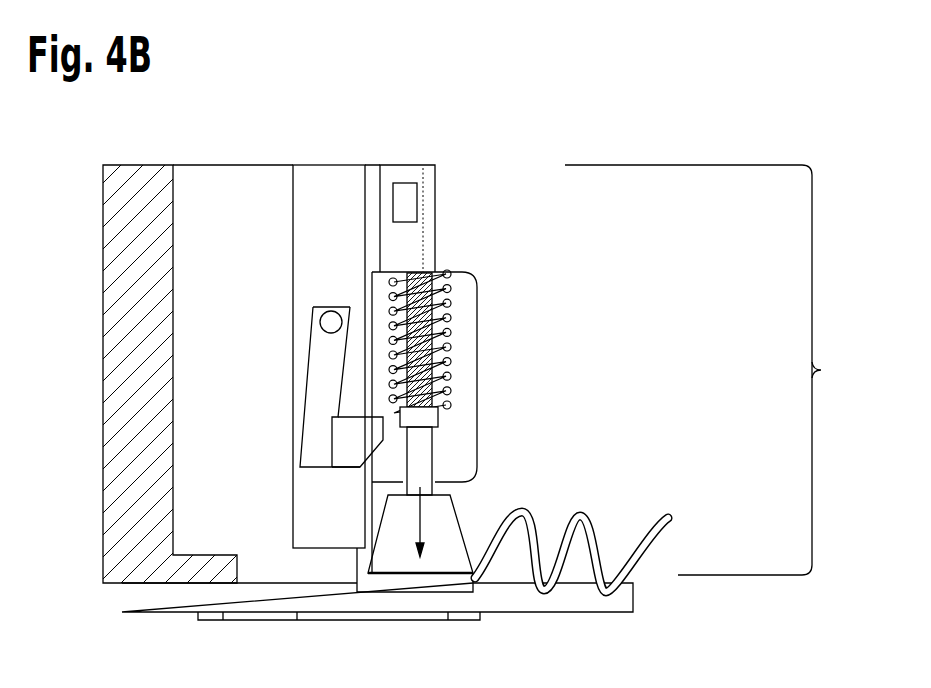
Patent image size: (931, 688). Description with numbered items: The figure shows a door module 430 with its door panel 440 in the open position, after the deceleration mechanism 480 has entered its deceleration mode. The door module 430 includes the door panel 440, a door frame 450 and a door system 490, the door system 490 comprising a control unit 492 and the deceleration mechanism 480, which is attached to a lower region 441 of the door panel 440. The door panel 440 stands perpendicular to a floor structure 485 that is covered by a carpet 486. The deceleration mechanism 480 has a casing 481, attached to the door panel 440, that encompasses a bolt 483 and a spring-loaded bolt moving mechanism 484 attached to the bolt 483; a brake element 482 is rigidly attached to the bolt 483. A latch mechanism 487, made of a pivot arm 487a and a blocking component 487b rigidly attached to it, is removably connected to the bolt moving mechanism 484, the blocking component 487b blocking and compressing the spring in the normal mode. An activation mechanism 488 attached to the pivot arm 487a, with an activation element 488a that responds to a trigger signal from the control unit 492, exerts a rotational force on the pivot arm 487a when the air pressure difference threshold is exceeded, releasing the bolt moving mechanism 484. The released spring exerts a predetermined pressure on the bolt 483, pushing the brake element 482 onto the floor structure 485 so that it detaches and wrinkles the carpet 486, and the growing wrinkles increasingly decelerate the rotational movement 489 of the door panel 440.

The door module 430 is at (188, 140).
The door panel 440 is at (320, 210).
The lower region 441 is at (719, 370).
The door frame 450 is at (147, 245).
The deceleration mechanism 480 is at (503, 389).
The casing 481 is at (463, 347).
The brake element 482 is at (447, 532).
The bolt 483 is at (418, 450).
The bolt moving mechanism 484 is at (450, 404).
The floor structure 485 is at (613, 596).
The carpet 486 is at (678, 518).
The latch mechanism 487 is at (209, 412).
The pivot arm 487a is at (322, 395).
The blocking component 487b is at (352, 447).
The activation mechanism 488 is at (272, 265).
The activation element 488a is at (331, 322).
The rotational movement 489 is at (282, 549).
The door system 490 is at (502, 188).
The control unit 492 is at (407, 207).